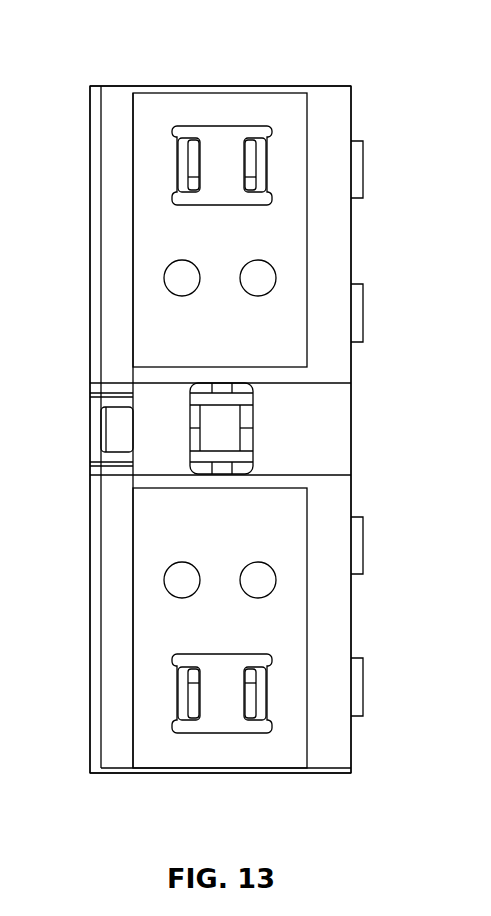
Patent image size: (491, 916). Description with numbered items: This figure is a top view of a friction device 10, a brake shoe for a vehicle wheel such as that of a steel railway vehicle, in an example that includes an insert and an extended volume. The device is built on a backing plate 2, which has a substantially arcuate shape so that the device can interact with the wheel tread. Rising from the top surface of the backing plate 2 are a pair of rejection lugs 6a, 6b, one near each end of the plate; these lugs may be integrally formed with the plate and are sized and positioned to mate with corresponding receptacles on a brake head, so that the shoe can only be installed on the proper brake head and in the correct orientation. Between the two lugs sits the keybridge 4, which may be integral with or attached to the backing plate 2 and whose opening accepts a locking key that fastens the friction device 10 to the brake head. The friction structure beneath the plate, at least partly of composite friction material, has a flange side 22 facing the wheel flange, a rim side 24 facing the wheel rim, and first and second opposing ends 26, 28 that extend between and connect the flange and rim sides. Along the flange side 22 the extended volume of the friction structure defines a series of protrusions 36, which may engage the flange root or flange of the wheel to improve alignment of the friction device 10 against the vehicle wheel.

The friction device 10 is at (392, 48).
The backing plate 2 is at (158, 113).
The first opposing end 26 is at (322, 86).
The second opposing end 28 is at (265, 773).
The rim side 24 is at (90, 553).
The flange side 22 is at (352, 245).
The protrusions 36 is at (390, 427).
The keybridge 4 is at (241, 428).
The rejection lug 6a is at (232, 157).
The rejection lug 6b is at (232, 703).